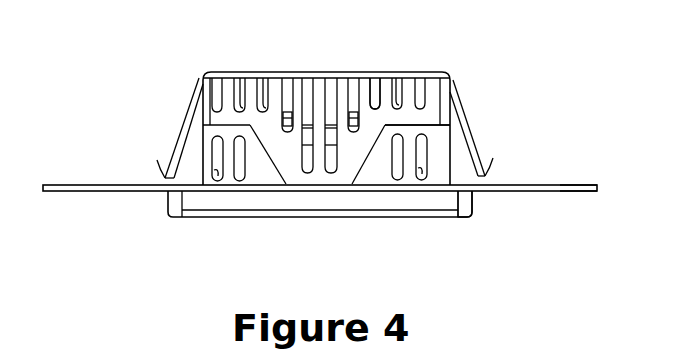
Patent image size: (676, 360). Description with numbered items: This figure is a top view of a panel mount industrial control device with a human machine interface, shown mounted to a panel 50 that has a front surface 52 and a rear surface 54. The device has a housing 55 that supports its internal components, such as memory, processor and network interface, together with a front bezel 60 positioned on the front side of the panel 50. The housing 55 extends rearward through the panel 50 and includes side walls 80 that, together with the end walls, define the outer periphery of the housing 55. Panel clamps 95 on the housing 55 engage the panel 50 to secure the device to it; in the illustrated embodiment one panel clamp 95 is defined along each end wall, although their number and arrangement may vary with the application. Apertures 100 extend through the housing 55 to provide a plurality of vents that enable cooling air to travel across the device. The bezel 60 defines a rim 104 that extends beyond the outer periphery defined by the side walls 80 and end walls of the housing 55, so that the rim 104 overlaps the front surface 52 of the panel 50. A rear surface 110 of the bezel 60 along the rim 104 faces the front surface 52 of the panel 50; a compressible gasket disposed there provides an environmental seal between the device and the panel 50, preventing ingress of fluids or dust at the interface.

The panel 50 is at (80, 188).
The front surface 52 is at (581, 192).
The rear surface 54 is at (582, 183).
The housing 55 is at (200, 88).
The front bezel 60 is at (320, 207).
The side walls 80 is at (425, 117).
The panel clamps 95 is at (467, 172).
The apertures 100 is at (379, 83).
The rim 104 is at (468, 200).
The rear surface 110 is at (177, 183).